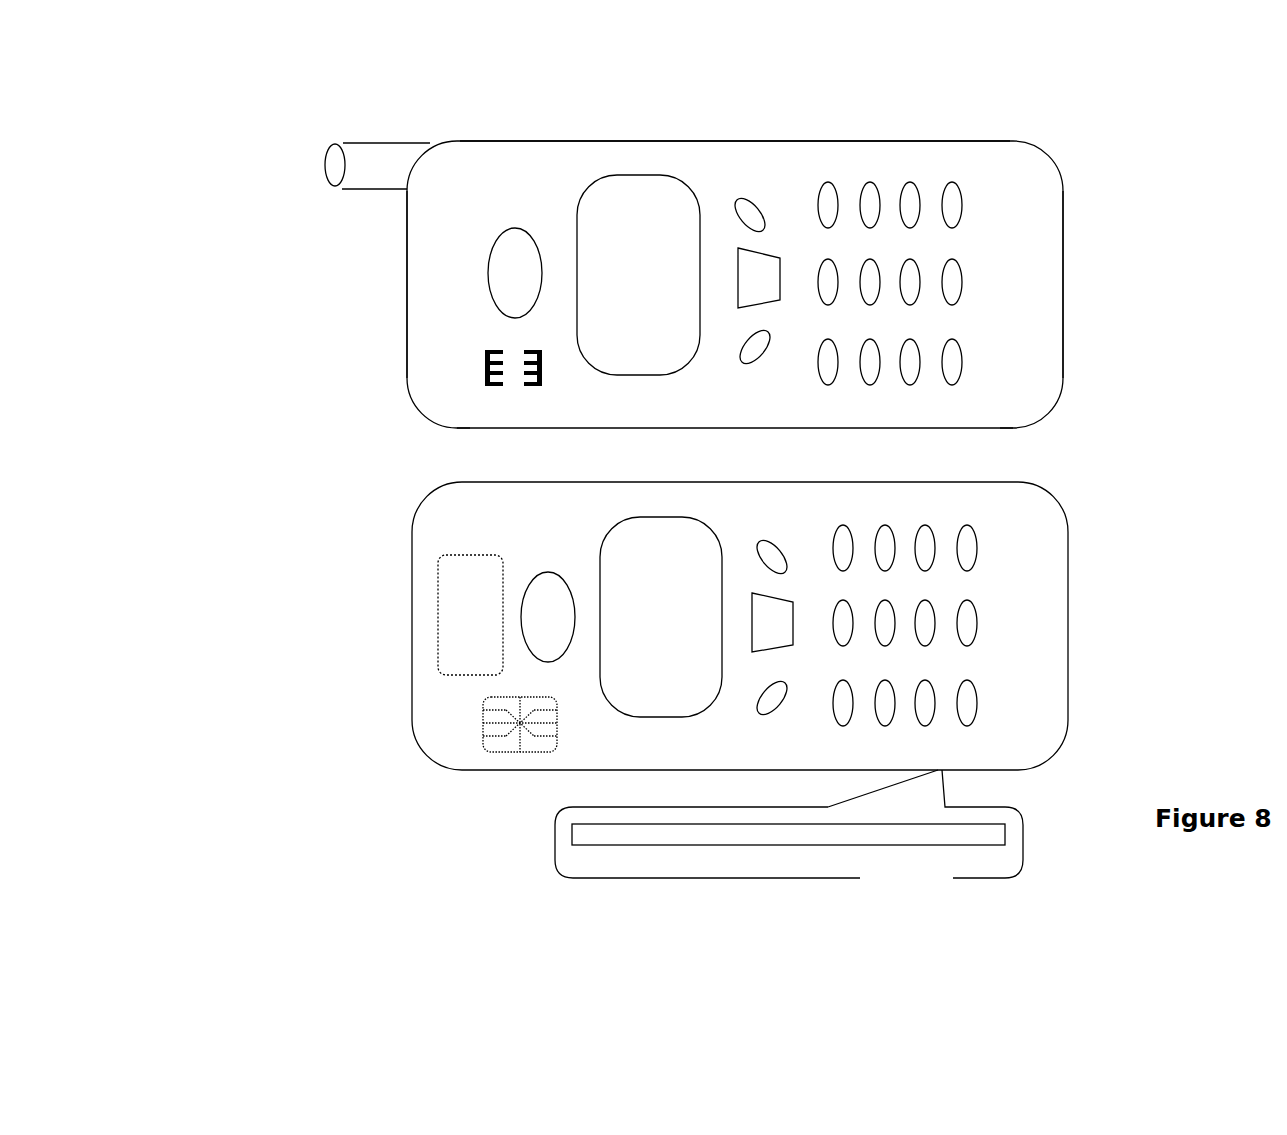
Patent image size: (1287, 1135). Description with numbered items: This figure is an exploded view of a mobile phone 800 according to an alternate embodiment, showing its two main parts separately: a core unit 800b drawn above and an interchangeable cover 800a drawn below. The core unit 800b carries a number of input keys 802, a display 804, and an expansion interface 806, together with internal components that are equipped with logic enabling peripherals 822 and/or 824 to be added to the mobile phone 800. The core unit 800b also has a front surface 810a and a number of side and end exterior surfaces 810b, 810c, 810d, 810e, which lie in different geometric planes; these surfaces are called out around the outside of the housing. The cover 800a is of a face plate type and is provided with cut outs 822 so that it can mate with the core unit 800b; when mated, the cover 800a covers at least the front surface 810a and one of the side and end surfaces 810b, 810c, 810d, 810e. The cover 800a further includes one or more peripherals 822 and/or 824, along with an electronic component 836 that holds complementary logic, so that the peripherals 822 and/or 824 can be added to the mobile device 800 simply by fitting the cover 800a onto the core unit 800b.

The mobile phone 800 is at (177, 437).
The cover 800a is at (487, 798).
The core unit 800b is at (320, 236).
The input keys 802 is at (957, 280).
The display 804 is at (664, 296).
The expansion interface 806 is at (485, 348).
The front surface 810a is at (1045, 375).
The side surface 810b is at (413, 390).
The side surface 810c is at (1063, 355).
The end surface 810d is at (1012, 140).
The end surface 810e is at (427, 430).
The peripheral 822 is at (700, 607).
The peripheral 824 is at (465, 625).
The electronic component 836 is at (483, 717).